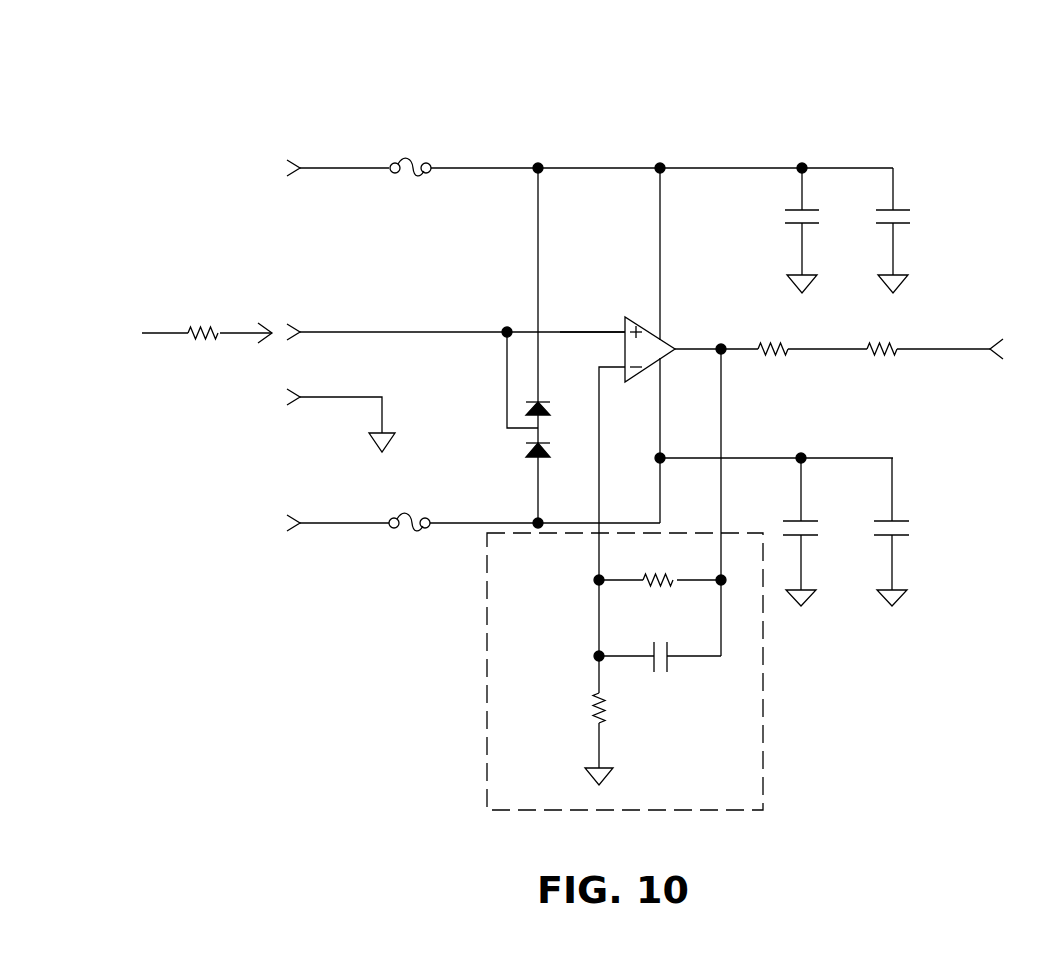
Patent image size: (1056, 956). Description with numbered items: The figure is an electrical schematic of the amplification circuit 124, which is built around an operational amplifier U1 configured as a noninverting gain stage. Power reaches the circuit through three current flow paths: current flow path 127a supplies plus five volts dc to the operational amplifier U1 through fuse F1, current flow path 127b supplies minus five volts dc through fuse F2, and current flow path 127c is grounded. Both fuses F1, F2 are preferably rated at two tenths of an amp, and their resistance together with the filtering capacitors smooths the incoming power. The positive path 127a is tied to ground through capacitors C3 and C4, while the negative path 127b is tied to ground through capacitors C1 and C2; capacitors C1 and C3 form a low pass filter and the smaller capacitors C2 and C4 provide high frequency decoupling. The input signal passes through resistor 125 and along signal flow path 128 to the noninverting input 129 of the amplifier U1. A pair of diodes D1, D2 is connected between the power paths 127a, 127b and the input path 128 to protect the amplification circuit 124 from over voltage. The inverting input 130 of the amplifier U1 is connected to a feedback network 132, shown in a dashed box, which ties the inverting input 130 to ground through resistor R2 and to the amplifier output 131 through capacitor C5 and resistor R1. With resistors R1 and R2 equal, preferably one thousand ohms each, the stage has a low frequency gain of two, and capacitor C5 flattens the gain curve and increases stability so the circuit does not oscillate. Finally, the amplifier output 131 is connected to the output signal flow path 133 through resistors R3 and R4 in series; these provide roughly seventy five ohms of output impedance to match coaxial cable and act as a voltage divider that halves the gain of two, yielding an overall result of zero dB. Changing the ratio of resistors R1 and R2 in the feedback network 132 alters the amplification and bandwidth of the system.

The amplification circuit 124 is at (590, 120).
The resistor 125 is at (206, 325).
The current flow path 127a is at (355, 168).
The current flow path 127b is at (355, 524).
The current flow path 127c is at (357, 375).
The signal flow path 128 is at (365, 332).
The noninverting input 129 is at (625, 320).
The inverting input 130 is at (622, 369).
The amplifier output 131 is at (677, 347).
The feedback network 132 is at (487, 690).
The output signal flow path 133 is at (973, 352).
The fuse F1 is at (412, 165).
The fuse F2 is at (412, 521).
The operational amplifier U1 is at (657, 330).
The diode D1 is at (540, 415).
The diode D2 is at (540, 460).
The resistor R1 is at (672, 578).
The resistor R2 is at (605, 722).
The resistor R3 is at (793, 313).
The resistor R4 is at (903, 313).
The filtering capacitor C1 is at (808, 534).
The filtering capacitor C2 is at (903, 534).
The filtering capacitor C3 is at (812, 224).
The filtering capacitor C4 is at (912, 224).
The capacitor C5 is at (664, 650).